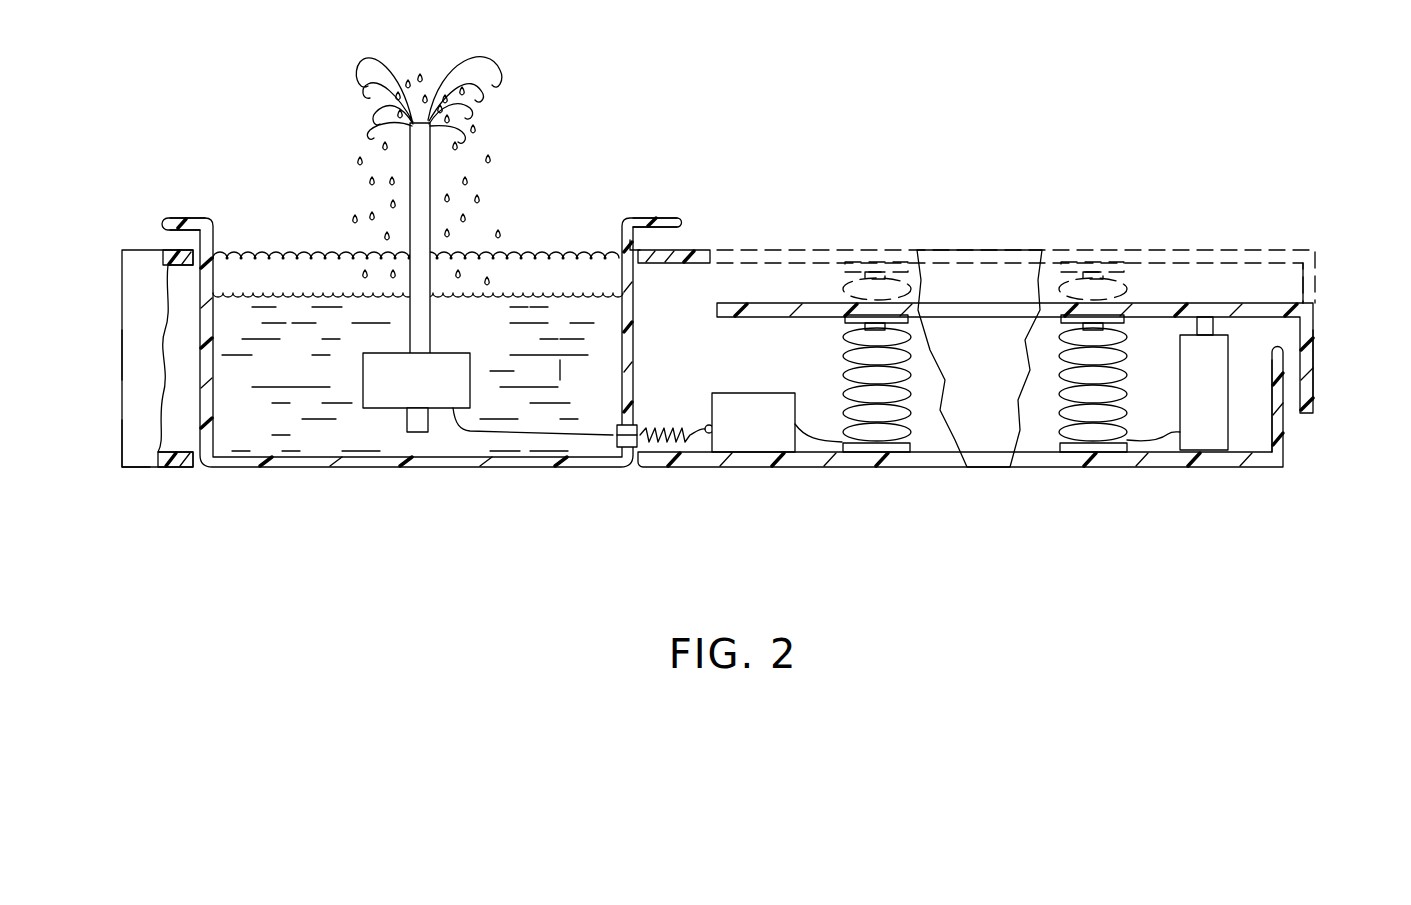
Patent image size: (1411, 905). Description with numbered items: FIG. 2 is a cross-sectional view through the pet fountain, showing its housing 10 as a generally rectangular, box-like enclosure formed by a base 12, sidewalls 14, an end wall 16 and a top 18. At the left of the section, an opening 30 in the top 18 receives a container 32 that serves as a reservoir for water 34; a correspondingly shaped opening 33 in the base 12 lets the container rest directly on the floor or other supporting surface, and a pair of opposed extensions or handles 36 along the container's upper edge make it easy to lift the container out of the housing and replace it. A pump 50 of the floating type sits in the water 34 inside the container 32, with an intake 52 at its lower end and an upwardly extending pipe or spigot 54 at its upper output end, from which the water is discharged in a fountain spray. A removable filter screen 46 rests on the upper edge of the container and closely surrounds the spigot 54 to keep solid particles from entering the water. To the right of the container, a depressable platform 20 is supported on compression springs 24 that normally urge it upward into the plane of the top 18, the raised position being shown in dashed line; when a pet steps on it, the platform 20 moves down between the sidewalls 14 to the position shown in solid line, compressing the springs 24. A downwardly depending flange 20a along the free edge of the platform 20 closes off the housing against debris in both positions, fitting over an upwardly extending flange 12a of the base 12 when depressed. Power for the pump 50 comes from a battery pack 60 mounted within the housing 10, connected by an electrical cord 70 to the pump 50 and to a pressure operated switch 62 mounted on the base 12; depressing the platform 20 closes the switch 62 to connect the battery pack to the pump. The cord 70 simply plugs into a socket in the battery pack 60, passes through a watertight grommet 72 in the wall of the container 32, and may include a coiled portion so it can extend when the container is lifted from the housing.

The housing 10 is at (113, 425).
The base 12 is at (860, 468).
The upwardly extending flange 12a is at (1284, 441).
The sidewalls 14 is at (137, 287).
The end wall 16 is at (121, 355).
The top 18 is at (178, 257).
The depressable platform 20 is at (1155, 303).
The downwardly depending flange 20a is at (1317, 263).
The compression springs 24 is at (903, 380).
The opening 30 is at (638, 245).
The container 32 is at (467, 469).
The opening 33 is at (203, 476).
The water 34 is at (542, 410).
The extensions or handles 36 is at (187, 217).
The removable filter screen 46 is at (322, 250).
The pump 50 is at (397, 392).
The intake 52 is at (412, 432).
The pipe or spigot 54 is at (432, 172).
The battery pack 60 is at (753, 437).
The pressure operated switch 62 is at (1202, 435).
The electrical cord 70 is at (553, 434).
The watertight grommet 72 is at (637, 441).